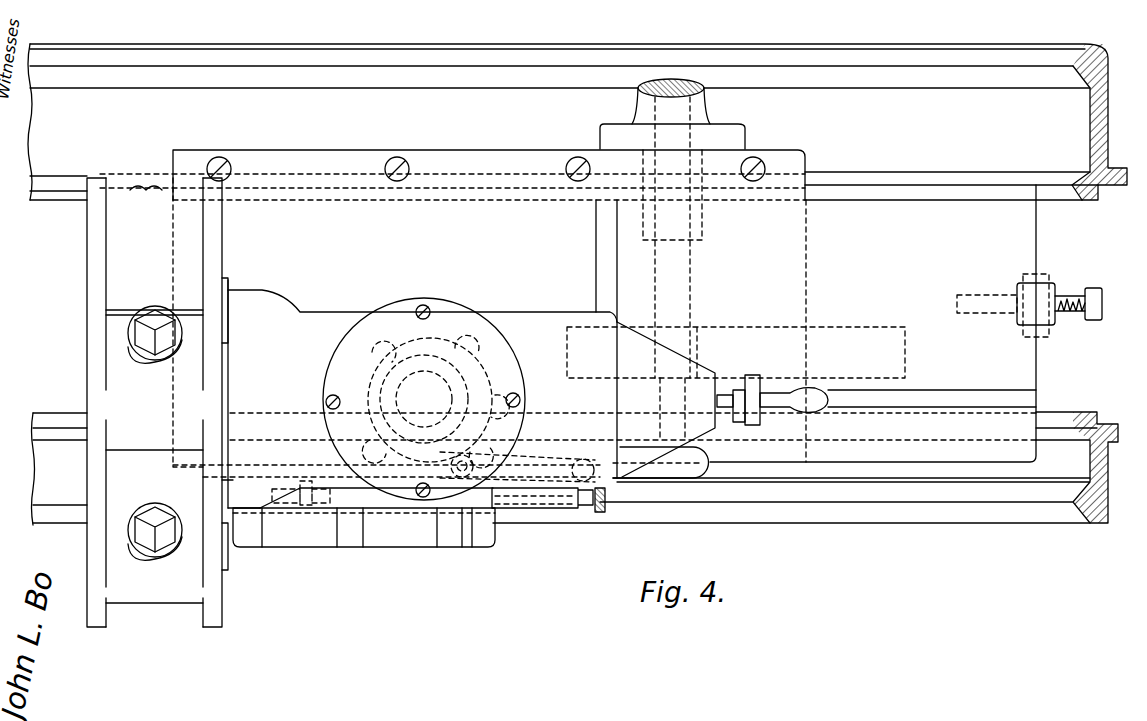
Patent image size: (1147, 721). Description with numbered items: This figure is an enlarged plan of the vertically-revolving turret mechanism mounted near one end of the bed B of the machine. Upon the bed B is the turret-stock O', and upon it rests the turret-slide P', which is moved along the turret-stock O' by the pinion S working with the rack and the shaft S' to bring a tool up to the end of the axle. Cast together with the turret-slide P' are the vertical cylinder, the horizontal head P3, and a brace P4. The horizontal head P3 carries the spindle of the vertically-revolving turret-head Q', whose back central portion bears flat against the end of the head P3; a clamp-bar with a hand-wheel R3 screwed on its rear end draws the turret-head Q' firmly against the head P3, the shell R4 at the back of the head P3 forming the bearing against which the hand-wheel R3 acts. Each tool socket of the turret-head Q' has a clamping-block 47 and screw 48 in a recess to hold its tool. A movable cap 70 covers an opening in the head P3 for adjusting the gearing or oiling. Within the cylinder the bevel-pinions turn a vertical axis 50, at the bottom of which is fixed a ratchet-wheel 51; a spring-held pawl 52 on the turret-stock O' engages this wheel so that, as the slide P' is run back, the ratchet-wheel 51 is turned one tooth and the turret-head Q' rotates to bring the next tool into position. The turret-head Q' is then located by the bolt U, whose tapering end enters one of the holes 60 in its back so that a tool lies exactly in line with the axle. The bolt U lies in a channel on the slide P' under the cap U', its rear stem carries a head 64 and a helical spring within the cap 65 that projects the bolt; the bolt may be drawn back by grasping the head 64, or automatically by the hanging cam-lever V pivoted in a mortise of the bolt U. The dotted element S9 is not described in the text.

The bed B is at (577, 284).
The turret-stock O' is at (452, 175).
The shaft S' is at (672, 225).
The vertically-revolving turret-head Q' is at (140, 402).
The screw 48 is at (155, 431).
The clamping-block 47 is at (152, 358).
The turret-slide P' is at (690, 331).
The horizontal head P3 is at (395, 394).
The brace P4 is at (591, 339).
The movable cap 70 is at (424, 399).
The vertical axis 50 is at (448, 378).
The ratchet-wheel 51 is at (440, 350).
The pawl 52 is at (515, 452).
The bolt U is at (248, 477).
The hanging cam-lever V is at (272, 496).
The cap U' is at (364, 527).
The holes 60 is at (216, 484).
The cap 65 is at (540, 510).
The head 64 is at (599, 515).
The shell R4 is at (666, 399).
The hand-wheel R3 is at (750, 382).
The pinion S is at (736, 316).
The adjusting screw S9 is at (770, 338).